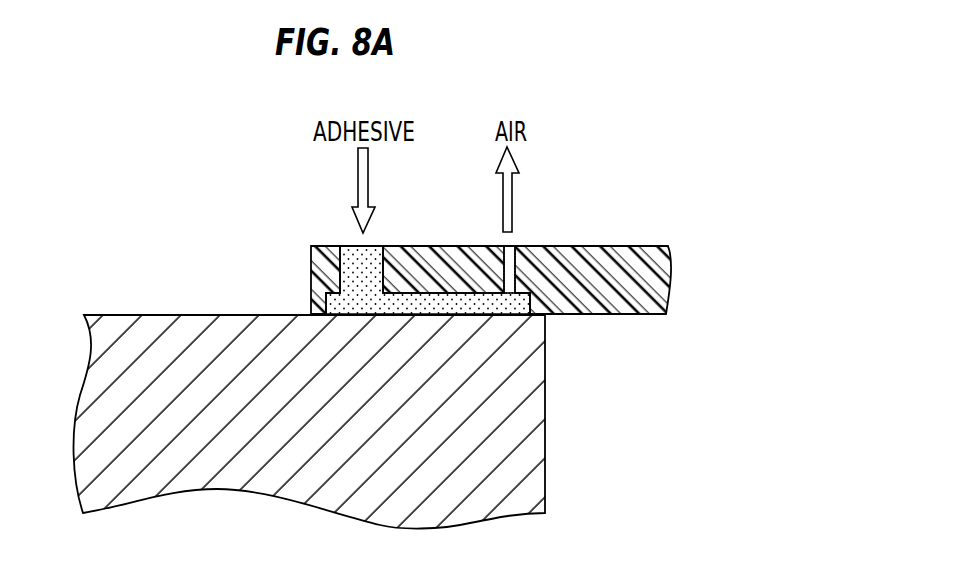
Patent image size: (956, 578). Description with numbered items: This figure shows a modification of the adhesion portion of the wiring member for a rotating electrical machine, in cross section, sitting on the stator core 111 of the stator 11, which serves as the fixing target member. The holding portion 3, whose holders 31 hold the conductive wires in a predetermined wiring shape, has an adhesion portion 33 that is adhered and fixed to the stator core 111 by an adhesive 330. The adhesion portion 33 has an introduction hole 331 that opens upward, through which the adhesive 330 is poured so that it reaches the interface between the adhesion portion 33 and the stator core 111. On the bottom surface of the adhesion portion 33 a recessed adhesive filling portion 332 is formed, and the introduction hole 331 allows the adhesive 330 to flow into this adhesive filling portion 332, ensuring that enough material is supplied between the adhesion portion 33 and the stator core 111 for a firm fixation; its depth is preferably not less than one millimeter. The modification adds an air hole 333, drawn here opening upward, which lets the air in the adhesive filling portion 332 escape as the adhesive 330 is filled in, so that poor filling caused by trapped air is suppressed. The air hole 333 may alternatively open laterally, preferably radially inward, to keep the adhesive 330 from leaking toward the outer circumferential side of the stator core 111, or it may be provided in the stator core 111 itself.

The holding portion 3 is at (473, 243).
The holder 31 is at (600, 262).
The adhesion portion 33 is at (308, 242).
The adhesive 330 is at (372, 263).
The introduction hole 331 is at (340, 247).
The adhesive filling portion 332 is at (452, 302).
The air hole 333 is at (516, 247).
The stator 11 is at (302, 375).
The stator core 111 is at (165, 328).